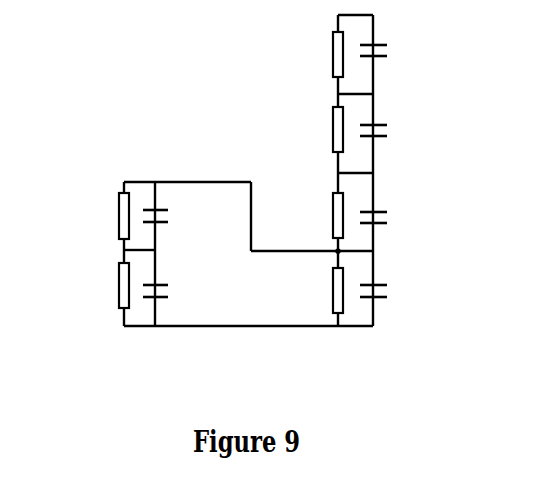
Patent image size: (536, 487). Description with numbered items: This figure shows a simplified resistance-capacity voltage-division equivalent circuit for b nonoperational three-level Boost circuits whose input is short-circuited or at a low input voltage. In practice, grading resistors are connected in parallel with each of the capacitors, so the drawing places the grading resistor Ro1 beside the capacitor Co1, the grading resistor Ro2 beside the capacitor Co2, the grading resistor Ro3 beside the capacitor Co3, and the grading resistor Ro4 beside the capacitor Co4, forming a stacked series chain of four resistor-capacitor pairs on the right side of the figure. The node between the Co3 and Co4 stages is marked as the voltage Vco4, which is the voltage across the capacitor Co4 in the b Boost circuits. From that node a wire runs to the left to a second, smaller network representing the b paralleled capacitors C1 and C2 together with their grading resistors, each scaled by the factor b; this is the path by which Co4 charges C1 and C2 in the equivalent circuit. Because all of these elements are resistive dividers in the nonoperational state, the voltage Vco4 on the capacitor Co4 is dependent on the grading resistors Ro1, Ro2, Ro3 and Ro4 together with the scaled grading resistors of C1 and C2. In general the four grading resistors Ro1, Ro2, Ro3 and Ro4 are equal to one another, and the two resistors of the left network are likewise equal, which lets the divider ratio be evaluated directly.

The grading resistor of Co1 Ro1 is at (310, 54).
The grading resistor of Co2 Ro2 is at (310, 129).
The grading resistor of Co3 Ro3 is at (310, 215).
The grading resistor of Co4 Ro4 is at (310, 290).
The output capacitor Co1 is at (395, 52).
The output capacitor Co2 is at (395, 126).
The output capacitor Co3 is at (395, 217).
The output capacitor Co4 is at (395, 290).
The voltage of Co4 Vco4 is at (382, 250).